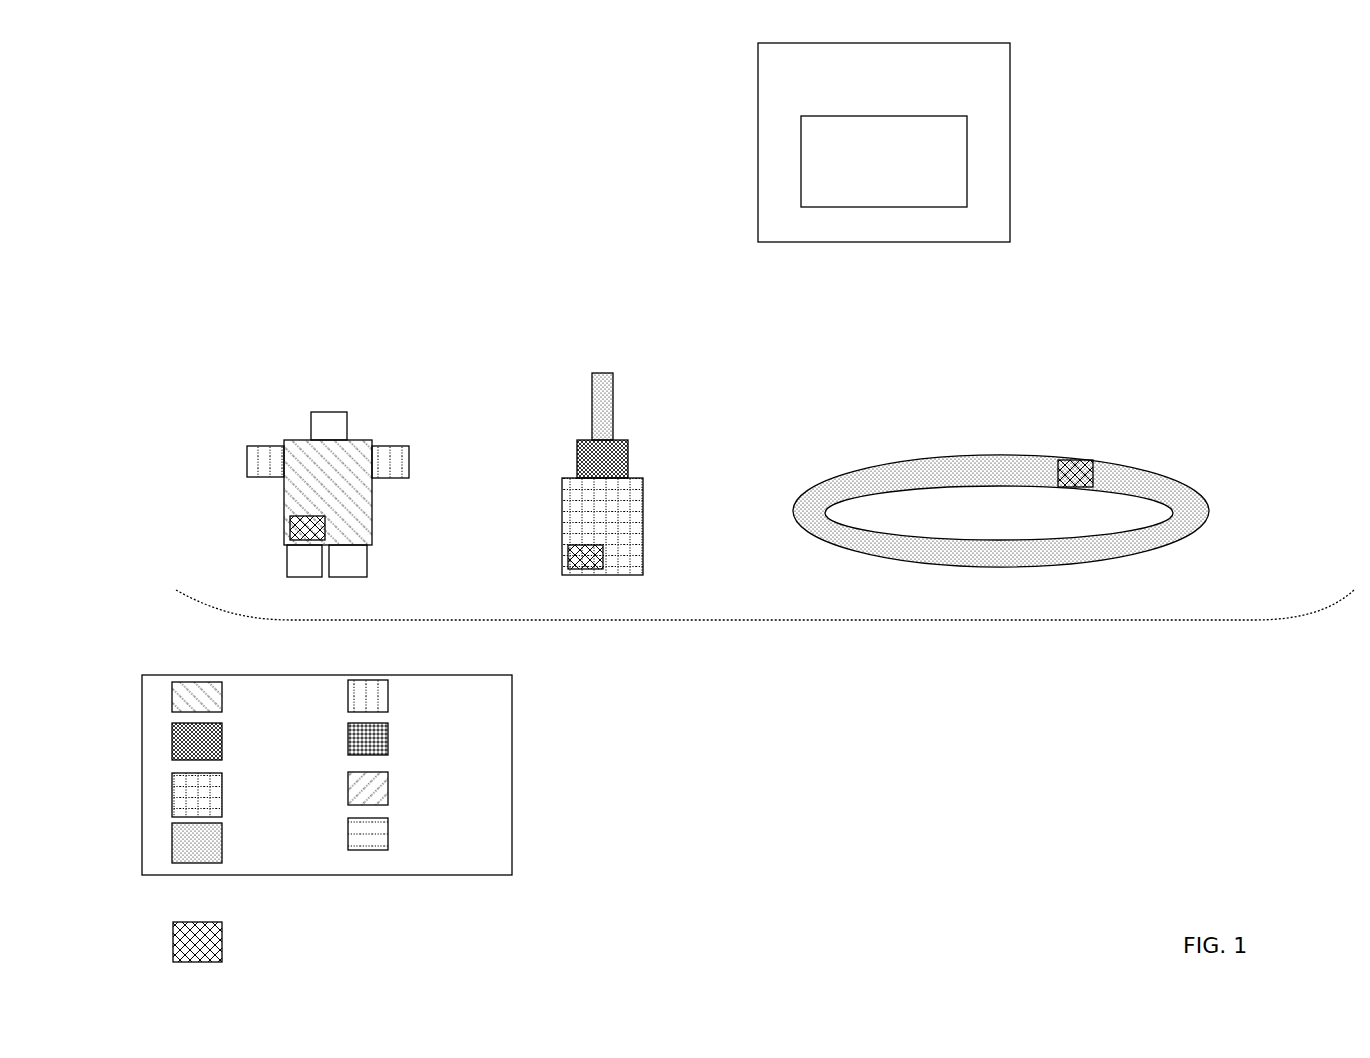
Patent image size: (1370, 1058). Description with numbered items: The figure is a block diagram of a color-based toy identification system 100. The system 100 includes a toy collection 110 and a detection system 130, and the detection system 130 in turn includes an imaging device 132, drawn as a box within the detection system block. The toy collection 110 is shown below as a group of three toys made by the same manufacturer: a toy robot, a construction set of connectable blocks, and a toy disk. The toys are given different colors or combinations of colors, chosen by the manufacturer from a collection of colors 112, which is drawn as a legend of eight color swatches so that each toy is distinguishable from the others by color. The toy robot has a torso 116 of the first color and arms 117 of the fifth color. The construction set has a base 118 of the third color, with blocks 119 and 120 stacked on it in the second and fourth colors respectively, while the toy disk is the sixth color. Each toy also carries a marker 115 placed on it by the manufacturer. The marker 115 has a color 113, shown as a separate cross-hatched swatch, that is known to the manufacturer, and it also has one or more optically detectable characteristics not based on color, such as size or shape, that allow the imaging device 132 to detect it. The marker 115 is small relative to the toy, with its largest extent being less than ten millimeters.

The color-based toy identification system 100 is at (428, 116).
The toy collection 110 is at (768, 622).
The collection of colors 112 is at (327, 761).
The marker color 113 is at (238, 942).
The marker 115 is at (277, 517).
The torso 116 is at (283, 485).
The arms 117 is at (258, 458).
The base 118 is at (563, 483).
The block 119 is at (577, 445).
The block 120 is at (592, 377).
The detection system 130 is at (884, 142).
The imaging device 132 is at (884, 161).